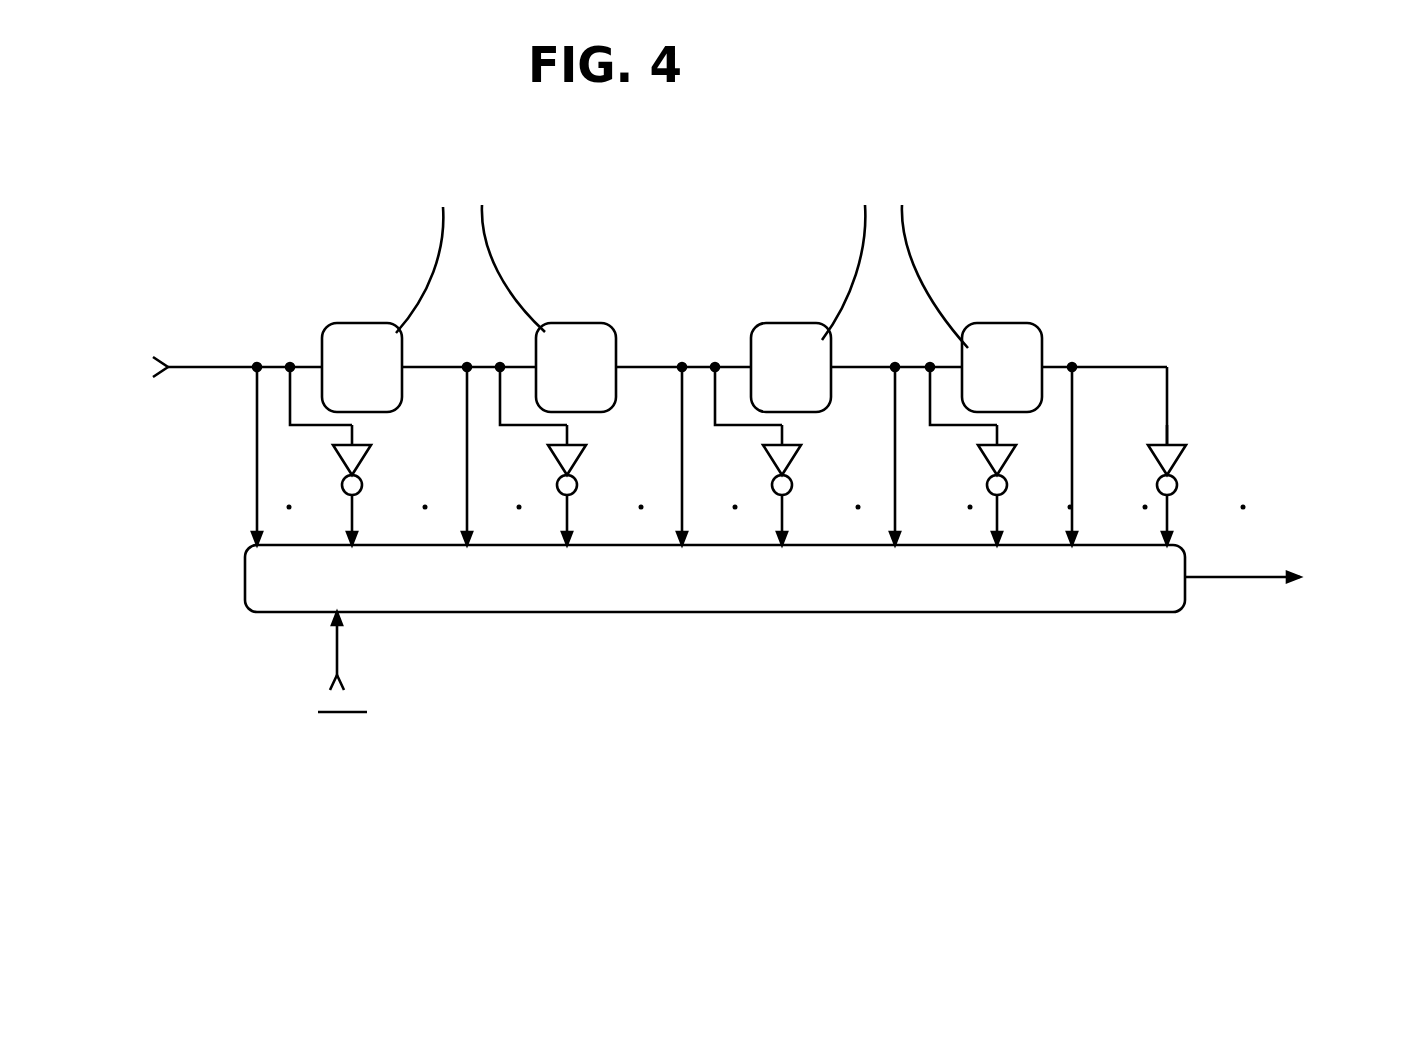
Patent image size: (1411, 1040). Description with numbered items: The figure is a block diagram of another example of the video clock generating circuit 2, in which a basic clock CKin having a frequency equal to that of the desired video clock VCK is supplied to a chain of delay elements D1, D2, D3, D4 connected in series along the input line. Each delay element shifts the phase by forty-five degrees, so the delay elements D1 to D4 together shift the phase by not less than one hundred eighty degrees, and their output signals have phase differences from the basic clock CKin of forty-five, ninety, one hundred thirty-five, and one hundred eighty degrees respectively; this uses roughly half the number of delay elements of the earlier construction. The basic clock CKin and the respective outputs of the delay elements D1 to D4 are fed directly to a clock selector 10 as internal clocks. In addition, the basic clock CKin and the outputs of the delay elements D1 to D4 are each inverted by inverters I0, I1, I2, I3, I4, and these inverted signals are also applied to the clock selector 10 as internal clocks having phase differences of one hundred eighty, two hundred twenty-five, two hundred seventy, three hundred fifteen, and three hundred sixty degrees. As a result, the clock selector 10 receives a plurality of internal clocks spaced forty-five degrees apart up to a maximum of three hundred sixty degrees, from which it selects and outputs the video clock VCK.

The video clock generating circuit 2 is at (1150, 272).
The clock selector 10 is at (468, 598).
The delay element D1 is at (362, 335).
The delay element D2 is at (580, 332).
The delay element D3 is at (792, 332).
The delay element D4 is at (1002, 332).
The inverter I0 is at (366, 457).
The inverter I1 is at (581, 457).
The inverter I2 is at (796, 457).
The inverter I3 is at (1040, 453).
The inverter I4 is at (1181, 457).